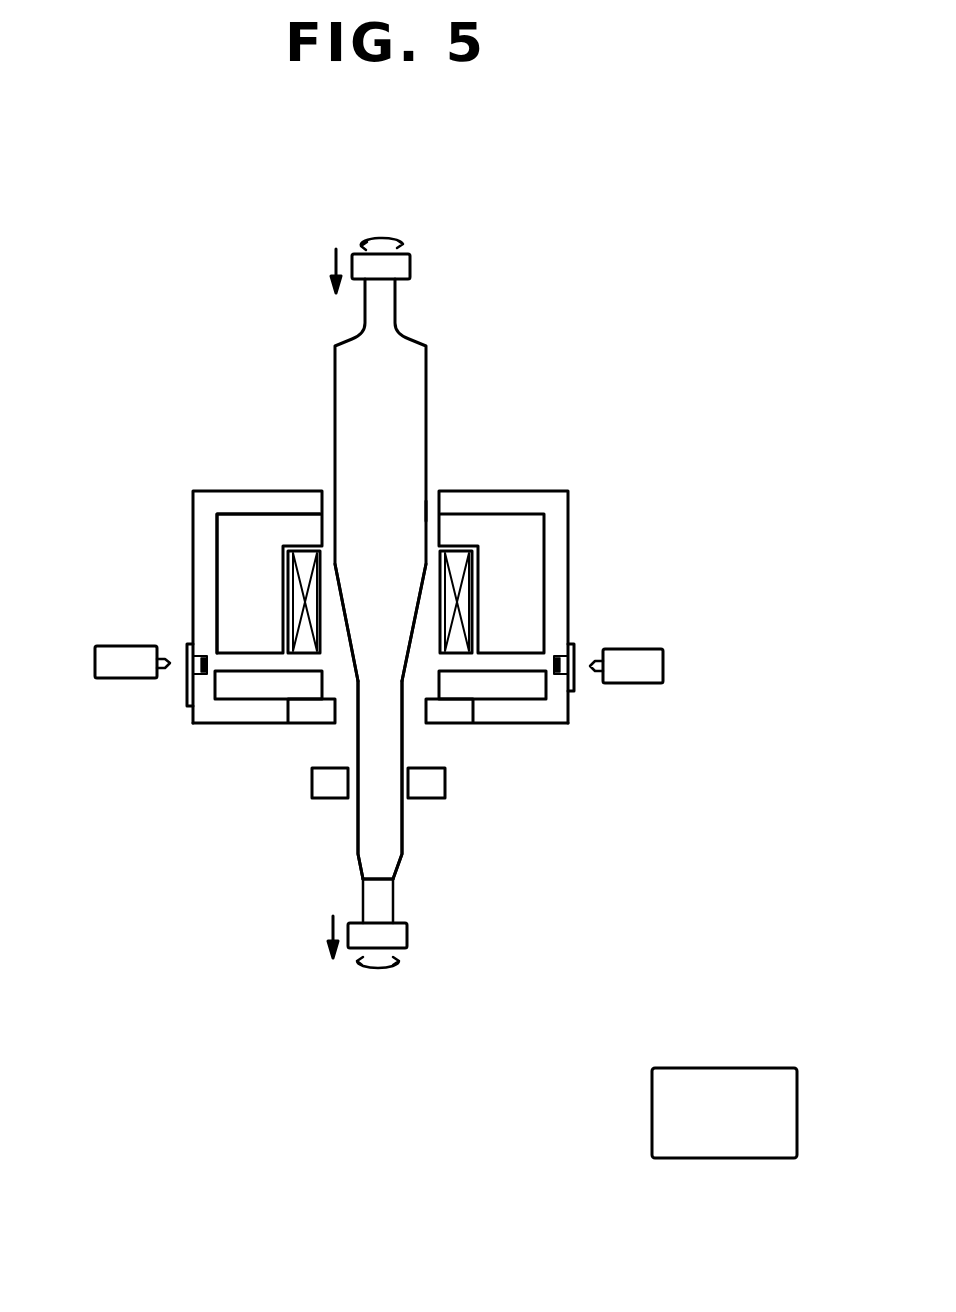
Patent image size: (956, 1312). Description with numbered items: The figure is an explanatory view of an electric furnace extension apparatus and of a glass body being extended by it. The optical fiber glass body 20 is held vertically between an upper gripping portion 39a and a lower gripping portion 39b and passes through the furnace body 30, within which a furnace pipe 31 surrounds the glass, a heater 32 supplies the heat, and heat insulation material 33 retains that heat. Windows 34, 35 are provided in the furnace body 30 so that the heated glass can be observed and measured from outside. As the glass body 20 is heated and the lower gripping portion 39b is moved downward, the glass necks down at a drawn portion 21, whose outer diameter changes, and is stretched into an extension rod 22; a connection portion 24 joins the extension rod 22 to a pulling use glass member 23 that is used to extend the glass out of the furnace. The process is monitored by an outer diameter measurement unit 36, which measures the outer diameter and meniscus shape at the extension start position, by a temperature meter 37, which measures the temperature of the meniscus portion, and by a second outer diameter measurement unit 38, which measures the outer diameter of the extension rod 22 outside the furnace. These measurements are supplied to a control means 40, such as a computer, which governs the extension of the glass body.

The optical fiber glass body 20 is at (417, 412).
The drawn portion 21 is at (372, 638).
The extension rod 22 is at (357, 851).
The pulling use glass member 23 is at (372, 893).
The connection portion 24 is at (390, 872).
The furnace body 30 is at (560, 527).
The furnace pipe 31 is at (433, 503).
The heater 32 is at (300, 580).
The heat insulation material 33 is at (247, 527).
The window 34 is at (557, 675).
The window 35 is at (200, 707).
The outer diameter measurement unit 36 is at (638, 672).
The temperature meter 37 is at (118, 670).
The outer diameter measurement unit of the extending rod 38 is at (440, 790).
The gripping portion 39a is at (410, 260).
The gripping portion 39b is at (402, 938).
The control means 40 is at (763, 1065).